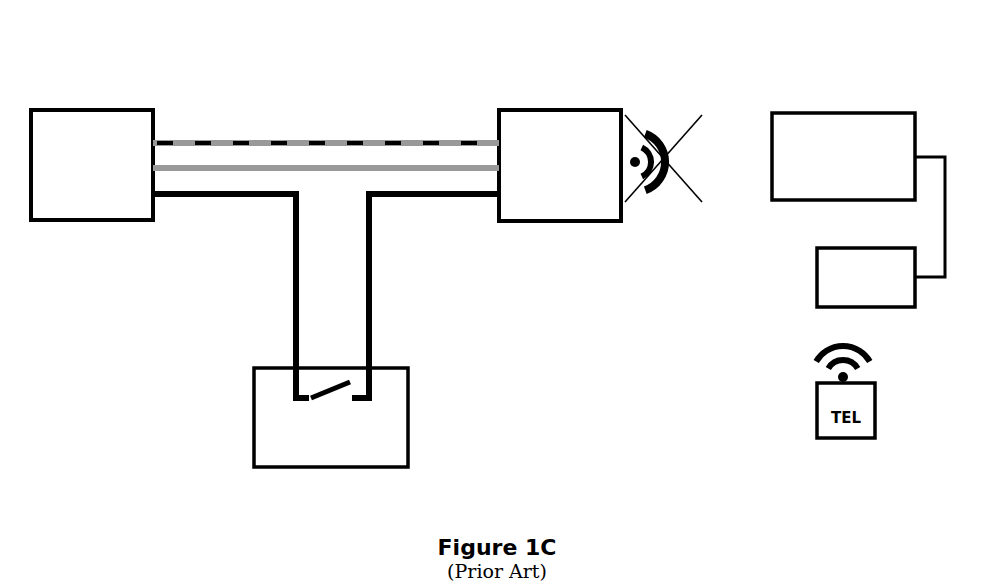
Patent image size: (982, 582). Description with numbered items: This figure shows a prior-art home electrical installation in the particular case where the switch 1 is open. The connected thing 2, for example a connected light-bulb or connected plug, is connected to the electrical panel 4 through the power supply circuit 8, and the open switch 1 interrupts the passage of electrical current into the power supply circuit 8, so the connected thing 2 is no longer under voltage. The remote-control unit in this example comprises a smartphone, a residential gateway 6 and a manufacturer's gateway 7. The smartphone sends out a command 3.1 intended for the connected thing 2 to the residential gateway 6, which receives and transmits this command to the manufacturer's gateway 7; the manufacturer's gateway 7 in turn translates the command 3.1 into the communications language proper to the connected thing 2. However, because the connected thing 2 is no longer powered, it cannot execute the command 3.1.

The switch 1 is at (331, 417).
The connected thing 2 is at (560, 165).
The command 3.1 is at (754, 251).
The electrical panel 4 is at (92, 165).
The residential gateway 6 is at (866, 277).
The manufacturer's gateway 7 is at (843, 156).
The power supply circuit 8 is at (436, 192).